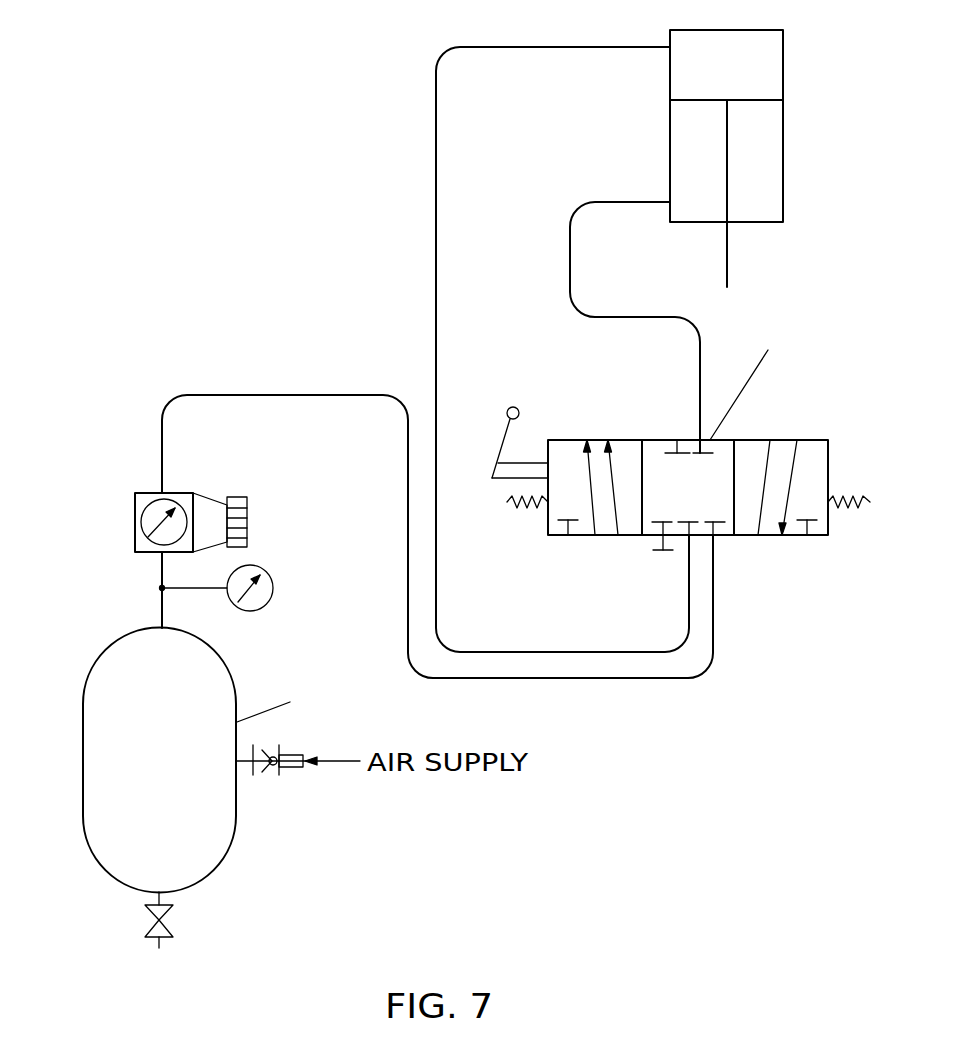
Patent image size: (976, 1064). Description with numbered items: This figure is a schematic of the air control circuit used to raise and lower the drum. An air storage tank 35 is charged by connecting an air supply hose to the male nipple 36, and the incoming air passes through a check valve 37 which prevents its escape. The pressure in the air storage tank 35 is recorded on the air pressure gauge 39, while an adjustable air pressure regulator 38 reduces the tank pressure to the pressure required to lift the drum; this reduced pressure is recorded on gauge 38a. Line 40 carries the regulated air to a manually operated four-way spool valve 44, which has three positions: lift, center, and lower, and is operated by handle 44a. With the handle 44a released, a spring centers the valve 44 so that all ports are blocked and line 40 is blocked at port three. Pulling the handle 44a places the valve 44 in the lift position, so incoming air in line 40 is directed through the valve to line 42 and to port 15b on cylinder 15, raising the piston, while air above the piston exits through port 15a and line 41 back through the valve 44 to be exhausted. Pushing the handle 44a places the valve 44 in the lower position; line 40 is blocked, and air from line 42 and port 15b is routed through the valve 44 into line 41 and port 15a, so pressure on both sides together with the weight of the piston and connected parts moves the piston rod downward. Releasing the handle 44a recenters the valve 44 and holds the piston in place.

The cylinder 15 is at (670, 88).
The port on cylinder 15a is at (670, 50).
The port on cylinder 15b is at (670, 202).
The air storage tank 35 is at (98, 655).
The male nipple 36 is at (295, 767).
The check valve 37 is at (265, 765).
The adjustable air pressure regulator 38 is at (137, 489).
The gauge 38a is at (138, 532).
The air pressure gauge 39 is at (255, 567).
The line 40 is at (563, 680).
The line 41 is at (436, 282).
The line 42 is at (570, 265).
The four-way spool valve 44 is at (745, 540).
The handle 44a is at (508, 408).